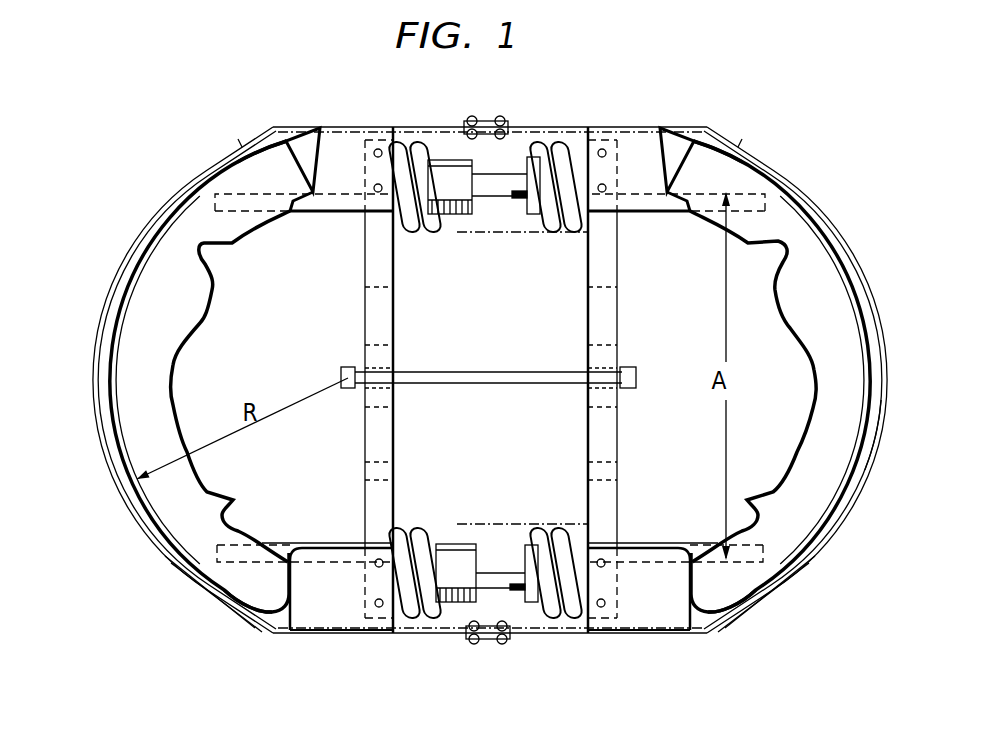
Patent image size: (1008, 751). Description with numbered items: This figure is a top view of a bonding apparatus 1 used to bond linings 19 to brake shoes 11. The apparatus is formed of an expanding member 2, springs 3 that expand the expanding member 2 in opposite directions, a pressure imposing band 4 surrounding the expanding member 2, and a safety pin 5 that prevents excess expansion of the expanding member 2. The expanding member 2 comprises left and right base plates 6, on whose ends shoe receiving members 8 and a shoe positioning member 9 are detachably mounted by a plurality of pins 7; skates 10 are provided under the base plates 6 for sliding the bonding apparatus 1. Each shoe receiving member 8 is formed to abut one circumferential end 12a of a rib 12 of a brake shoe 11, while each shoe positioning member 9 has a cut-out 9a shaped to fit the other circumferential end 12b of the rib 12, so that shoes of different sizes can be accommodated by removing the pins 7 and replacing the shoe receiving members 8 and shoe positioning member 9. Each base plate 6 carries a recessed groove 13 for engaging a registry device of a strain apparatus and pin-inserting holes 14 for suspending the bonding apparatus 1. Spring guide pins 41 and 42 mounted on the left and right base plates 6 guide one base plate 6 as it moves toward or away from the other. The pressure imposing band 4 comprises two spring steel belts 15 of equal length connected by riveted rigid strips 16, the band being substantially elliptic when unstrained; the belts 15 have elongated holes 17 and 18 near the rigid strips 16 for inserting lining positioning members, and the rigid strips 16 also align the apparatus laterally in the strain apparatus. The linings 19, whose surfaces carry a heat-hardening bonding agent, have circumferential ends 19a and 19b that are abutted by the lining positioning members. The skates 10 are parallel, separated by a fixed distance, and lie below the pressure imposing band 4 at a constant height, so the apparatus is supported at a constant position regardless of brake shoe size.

The bonding apparatus 1 is at (878, 272).
The expanding member 2 is at (622, 333).
The springs 3 is at (548, 222).
The pressure imposing band 4 is at (886, 424).
The safety pin 5 is at (550, 371).
The base plates 6 is at (365, 312).
The pins 7 is at (372, 187).
The shoe receiving members 8 is at (334, 547).
The shoe positioning member 9 is at (316, 213).
The cut-out 9a is at (302, 184).
The skates 10 is at (288, 214).
The brake shoe 11 is at (108, 340).
The rib 12 is at (172, 396).
The circumferential end 12a is at (284, 632).
The circumferential end 12b is at (276, 148).
The recessed groove 13 is at (375, 410).
The pin-inserting holes 14 is at (395, 288).
The belts 15 is at (117, 505).
The rigid strips 16 is at (486, 119).
The elongated hole 17 is at (300, 128).
The elongated hole 18 is at (200, 604).
The linings 19 is at (140, 553).
The circumferential end 19a is at (175, 570).
The circumferential end 19b is at (232, 150).
The spring guide pin 41 is at (450, 215).
The spring guide pin 42 is at (518, 214).